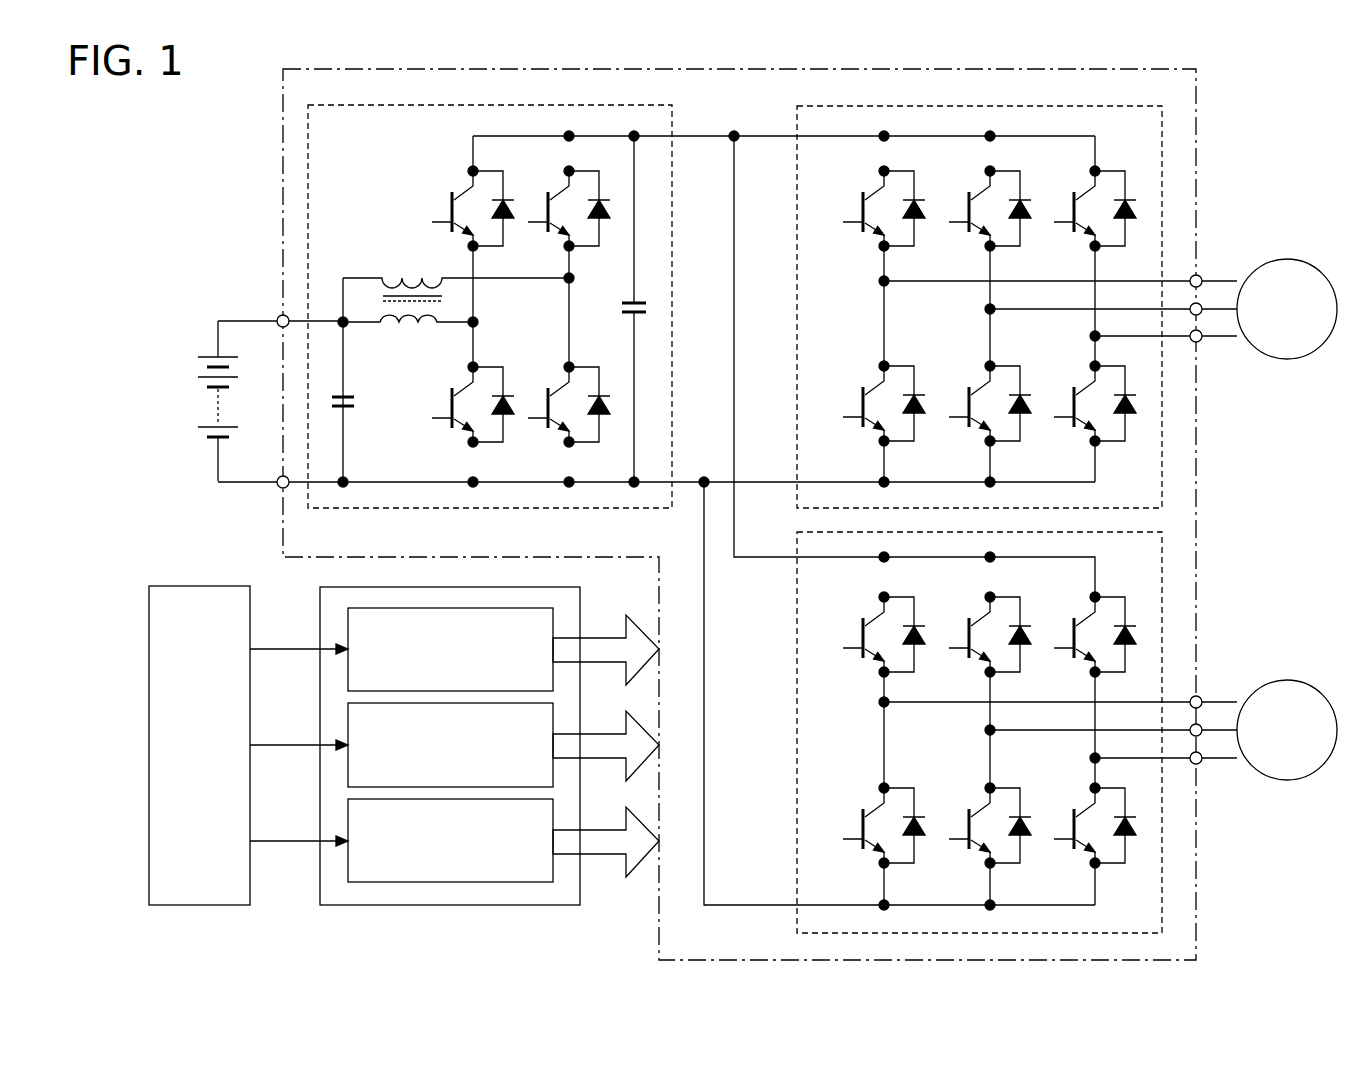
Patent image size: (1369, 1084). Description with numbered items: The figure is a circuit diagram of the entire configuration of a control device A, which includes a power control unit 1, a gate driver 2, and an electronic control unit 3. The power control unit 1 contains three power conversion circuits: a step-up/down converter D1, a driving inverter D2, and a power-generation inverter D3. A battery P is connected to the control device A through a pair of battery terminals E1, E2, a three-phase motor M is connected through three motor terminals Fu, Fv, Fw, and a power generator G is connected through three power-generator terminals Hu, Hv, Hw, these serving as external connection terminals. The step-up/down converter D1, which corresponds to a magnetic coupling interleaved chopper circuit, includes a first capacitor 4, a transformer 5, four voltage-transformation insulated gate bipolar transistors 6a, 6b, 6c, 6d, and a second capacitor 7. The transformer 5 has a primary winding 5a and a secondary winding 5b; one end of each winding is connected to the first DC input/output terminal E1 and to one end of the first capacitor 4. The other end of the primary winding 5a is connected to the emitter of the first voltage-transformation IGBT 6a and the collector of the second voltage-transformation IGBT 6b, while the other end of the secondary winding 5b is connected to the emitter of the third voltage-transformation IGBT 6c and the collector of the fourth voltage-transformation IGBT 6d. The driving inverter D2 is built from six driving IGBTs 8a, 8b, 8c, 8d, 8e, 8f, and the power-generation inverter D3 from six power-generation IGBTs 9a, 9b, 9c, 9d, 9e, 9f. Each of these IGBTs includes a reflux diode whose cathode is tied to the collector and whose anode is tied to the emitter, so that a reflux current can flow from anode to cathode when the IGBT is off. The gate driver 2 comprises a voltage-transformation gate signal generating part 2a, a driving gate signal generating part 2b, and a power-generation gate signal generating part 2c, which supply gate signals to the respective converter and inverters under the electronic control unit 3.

The control device A is at (268, 137).
The power control unit 1 is at (1196, 516).
The battery P is at (200, 350).
The battery terminal E1 is at (278, 314).
The battery terminal E2 is at (280, 493).
The step-up/down converter D1 is at (672, 300).
The driving inverter D2 is at (797, 340).
The power-generation inverter D3 is at (795, 728).
The first capacitor 4 is at (353, 408).
The transformer 5 is at (386, 260).
The primary winding 5a is at (408, 322).
The secondary winding 5b is at (418, 278).
The first voltage-transformation IGBT 6a is at (467, 201).
The second voltage-transformation IGBT 6b is at (467, 398).
The third voltage-transformation IGBT 6c is at (563, 201).
The fourth voltage-transformation IGBT 6d is at (563, 398).
The second capacitor 7 is at (632, 311).
The driving IGBT 8a is at (877, 201).
The driving IGBT 8b is at (877, 398).
The driving IGBT 8c is at (983, 201).
The driving IGBT 8d is at (983, 398).
The driving IGBT 8e is at (1088, 201).
The driving IGBT 8f is at (1088, 398).
The power-generation IGBT 9a is at (877, 628).
The power-generation IGBT 9b is at (877, 819).
The power-generation IGBT 9c is at (983, 628).
The power-generation IGBT 9d is at (983, 819).
The power-generation IGBT 9e is at (1088, 628).
The power-generation IGBT 9f is at (1088, 819).
The motor terminal Fu is at (1202, 276).
The motor terminal Fv is at (1204, 316).
The motor terminal Fw is at (1199, 344).
The three-phase motor M is at (1300, 264).
The power-generator terminal Hu is at (1202, 696).
The power-generator terminal Hv is at (1204, 736).
The power-generator terminal Hw is at (1199, 764).
The power generator G is at (1298, 684).
The gate driver 2 is at (582, 604).
The voltage-transformation gate signal generating part 2a is at (348, 634).
The driving gate signal generating part 2b is at (348, 729).
The power-generation gate signal generating part 2c is at (348, 825).
The electronic control unit 3 is at (148, 754).